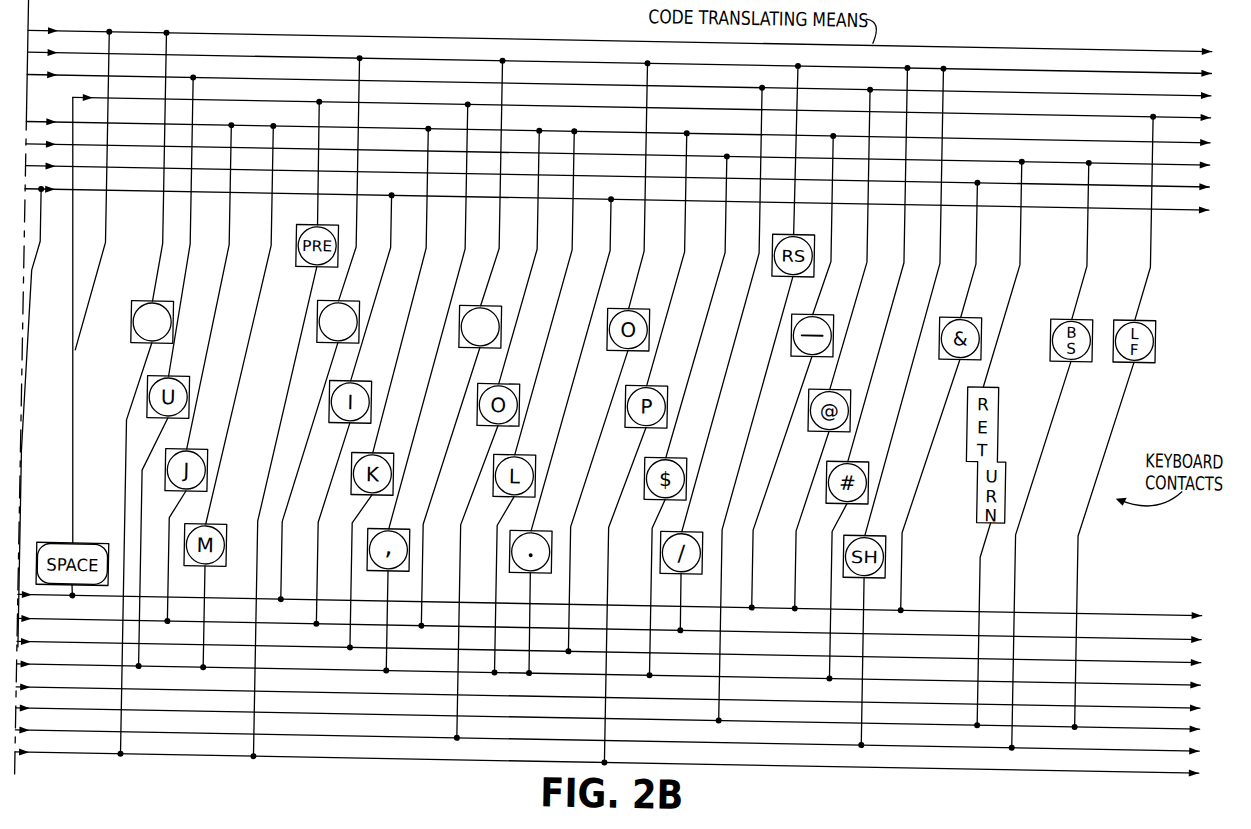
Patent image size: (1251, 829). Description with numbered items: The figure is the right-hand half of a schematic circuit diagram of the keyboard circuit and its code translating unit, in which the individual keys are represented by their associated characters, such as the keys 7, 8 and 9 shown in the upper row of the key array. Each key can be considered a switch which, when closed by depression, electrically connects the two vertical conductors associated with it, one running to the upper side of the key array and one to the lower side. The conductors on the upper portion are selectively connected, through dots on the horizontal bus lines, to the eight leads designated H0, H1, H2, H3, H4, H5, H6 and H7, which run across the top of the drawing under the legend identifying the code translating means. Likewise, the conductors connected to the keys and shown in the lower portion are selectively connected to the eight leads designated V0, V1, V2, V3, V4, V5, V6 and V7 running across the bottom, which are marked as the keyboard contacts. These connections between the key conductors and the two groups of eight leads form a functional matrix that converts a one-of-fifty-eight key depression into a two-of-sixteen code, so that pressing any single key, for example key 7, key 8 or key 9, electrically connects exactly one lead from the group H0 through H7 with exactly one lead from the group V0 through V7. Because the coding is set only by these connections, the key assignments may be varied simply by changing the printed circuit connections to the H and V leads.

The lead H-0 H0 is at (633, 41).
The lead H-1 H1 is at (632, 63).
The lead H-2 H2 is at (632, 85).
The lead H-3 H3 is at (655, 108).
The lead H-4 H4 is at (631, 132).
The lead H-5 H5 is at (631, 154).
The lead H-6 H6 is at (630, 176).
The lead H-7 H7 is at (630, 199).
The lead V-0 V0 is at (623, 605).
The lead V-1 V1 is at (622, 629).
The lead V-2 V2 is at (622, 652).
The lead V-3 V3 is at (621, 674).
The lead V-4 V4 is at (621, 697).
The lead V-5 V5 is at (621, 718).
The lead V-6 V6 is at (620, 740).
The lead V-7 V7 is at (620, 762).
The key 7 is at (147, 393).
The key 8 is at (321, 329).
The key 9 is at (462, 343).